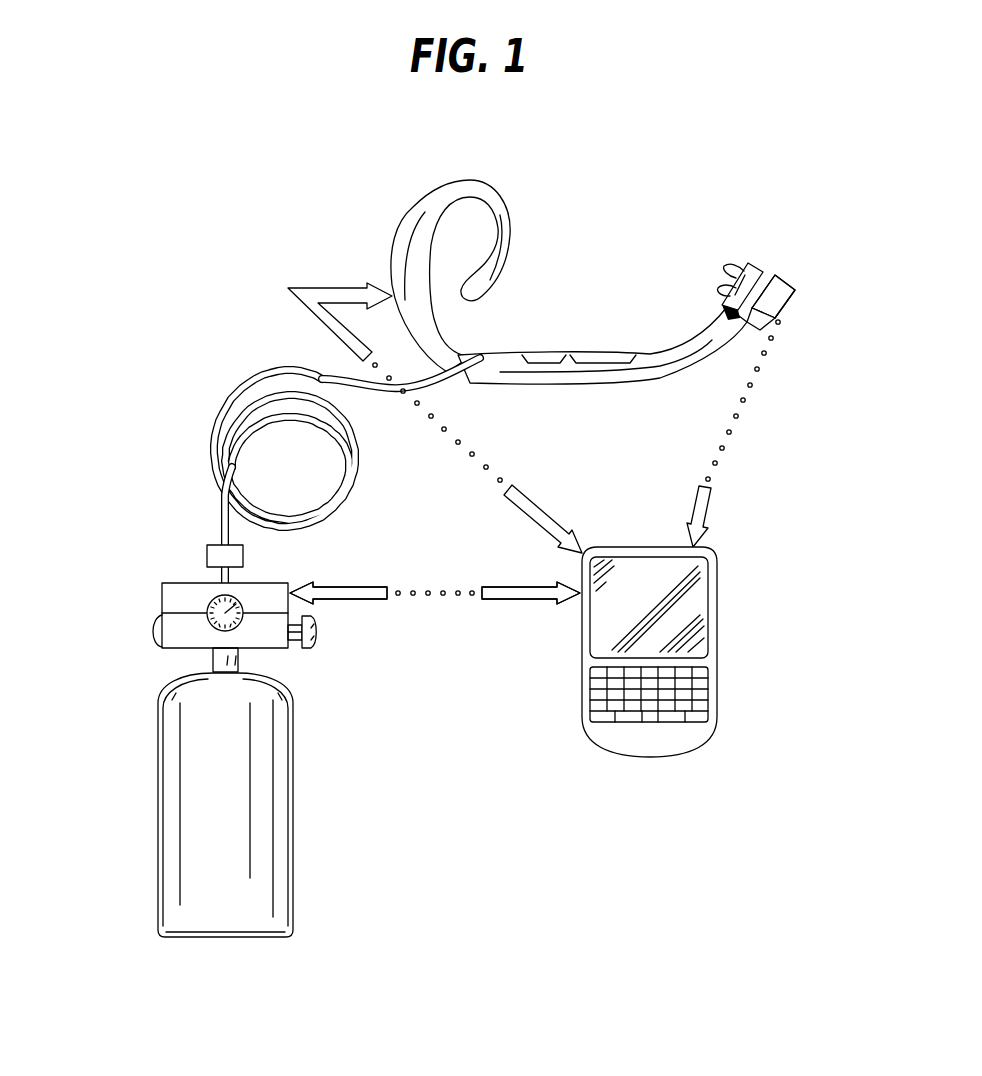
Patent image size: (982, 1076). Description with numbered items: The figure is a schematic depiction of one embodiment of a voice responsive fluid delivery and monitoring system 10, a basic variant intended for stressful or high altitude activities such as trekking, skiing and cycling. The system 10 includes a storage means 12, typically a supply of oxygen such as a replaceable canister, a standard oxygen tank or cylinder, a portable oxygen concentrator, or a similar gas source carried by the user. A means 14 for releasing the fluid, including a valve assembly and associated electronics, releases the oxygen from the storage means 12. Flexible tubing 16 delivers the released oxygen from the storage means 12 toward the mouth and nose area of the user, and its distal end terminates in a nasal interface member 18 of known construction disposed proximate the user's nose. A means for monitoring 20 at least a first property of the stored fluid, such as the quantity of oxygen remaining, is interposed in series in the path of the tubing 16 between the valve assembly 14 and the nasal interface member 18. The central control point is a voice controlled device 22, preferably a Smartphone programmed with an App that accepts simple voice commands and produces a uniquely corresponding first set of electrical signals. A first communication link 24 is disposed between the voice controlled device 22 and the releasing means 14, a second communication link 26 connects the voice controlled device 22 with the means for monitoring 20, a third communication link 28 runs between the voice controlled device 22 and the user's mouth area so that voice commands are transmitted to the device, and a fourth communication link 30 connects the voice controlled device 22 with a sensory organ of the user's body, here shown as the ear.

The voice responsive fluid delivery and monitoring system 10 is at (153, 302).
The storage means 12 is at (294, 842).
The means for releasing the fluid 14 is at (164, 652).
The flexible tubing 16 is at (220, 524).
The nasal interface member 18 is at (758, 262).
The means for monitoring 20 is at (203, 555).
The voice controlled device 22 is at (722, 588).
The first communication link 24 is at (522, 607).
The second communication link 26 is at (522, 607).
The third communication link 28 is at (766, 376).
The fourth communication link 30 is at (303, 325).